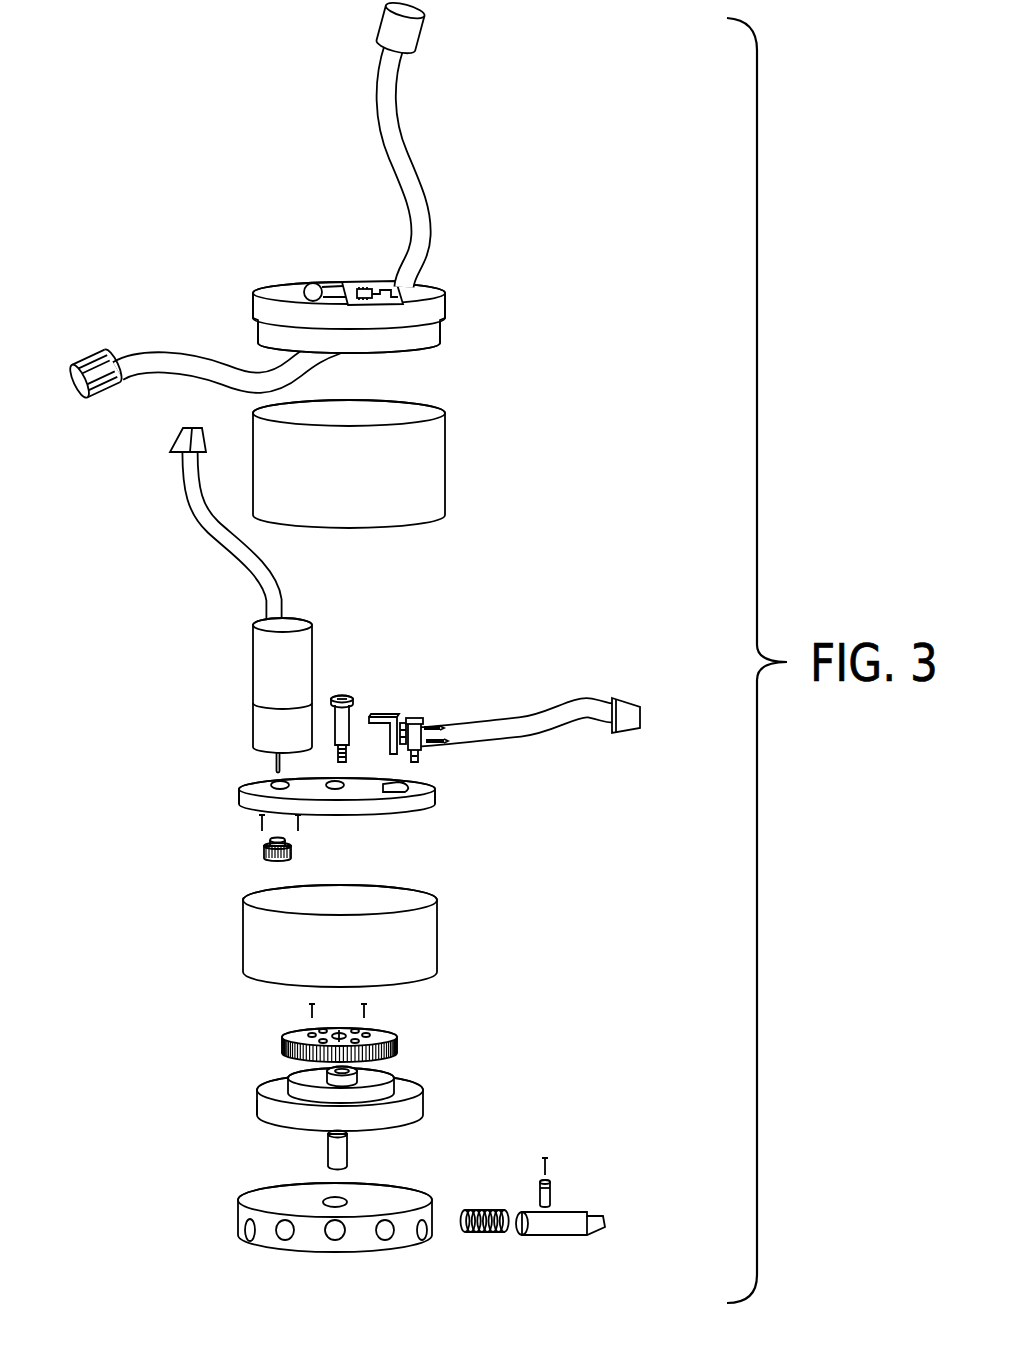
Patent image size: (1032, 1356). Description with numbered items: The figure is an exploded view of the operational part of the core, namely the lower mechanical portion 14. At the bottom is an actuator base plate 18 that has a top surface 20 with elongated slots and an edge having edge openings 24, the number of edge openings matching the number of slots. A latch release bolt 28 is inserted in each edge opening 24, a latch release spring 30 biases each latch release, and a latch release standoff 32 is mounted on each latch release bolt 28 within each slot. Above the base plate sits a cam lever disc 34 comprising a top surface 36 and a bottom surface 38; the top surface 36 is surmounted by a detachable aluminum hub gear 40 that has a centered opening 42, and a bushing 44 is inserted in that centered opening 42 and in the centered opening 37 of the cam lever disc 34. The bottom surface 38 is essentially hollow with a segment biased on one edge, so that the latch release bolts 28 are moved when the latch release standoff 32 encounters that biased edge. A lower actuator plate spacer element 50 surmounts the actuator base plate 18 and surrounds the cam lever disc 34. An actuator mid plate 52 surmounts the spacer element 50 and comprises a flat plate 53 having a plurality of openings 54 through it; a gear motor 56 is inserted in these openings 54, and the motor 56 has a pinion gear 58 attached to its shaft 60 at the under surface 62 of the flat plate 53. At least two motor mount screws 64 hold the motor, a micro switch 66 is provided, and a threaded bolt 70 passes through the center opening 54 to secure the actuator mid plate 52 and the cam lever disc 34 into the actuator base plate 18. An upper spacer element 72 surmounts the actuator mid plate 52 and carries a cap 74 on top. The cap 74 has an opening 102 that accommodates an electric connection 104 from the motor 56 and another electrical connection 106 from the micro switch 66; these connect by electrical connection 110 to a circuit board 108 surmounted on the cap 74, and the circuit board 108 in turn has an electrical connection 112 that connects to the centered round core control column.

The lower mechanical portion 14 is at (118, 699).
The actuator base plate 18 is at (255, 1192).
The top surface 20 is at (270, 1188).
The edge openings 24 is at (386, 1240).
The latch release bolt 28 is at (578, 1212).
The latch release spring 30 is at (483, 1208).
The latch release standoff 32 is at (551, 1190).
The cam lever disc 34 is at (423, 1106).
The top surface 36 is at (399, 1083).
The centered opening 37 is at (330, 1071).
The bottom surface 38 is at (393, 1128).
The aluminum hub gear 40 is at (384, 1033).
The centered opening 42 is at (341, 1032).
The bushing 44 is at (330, 1148).
The lower actuator plate spacer element 50 is at (438, 937).
The actuator mid plate 52 is at (435, 797).
The flat plate 53 is at (241, 792).
The openings 54 is at (278, 784).
The gear motor 56 is at (253, 645).
The pinion gear 58 is at (268, 848).
The shaft 60 is at (240, 760).
The under surface 62 is at (386, 812).
The motor mount screws 64 is at (258, 815).
The micro switch 66 is at (420, 725).
The threaded bolt 70 is at (343, 700).
The upper spacer element 72 is at (447, 467).
The cap 74 is at (428, 288).
The opening 102 is at (306, 287).
The electric connection 104 is at (186, 510).
The electrical connection 106 is at (642, 715).
The circuit board 108 is at (366, 283).
The electrical connection 110 is at (143, 350).
The electrical connection 112 is at (400, 116).